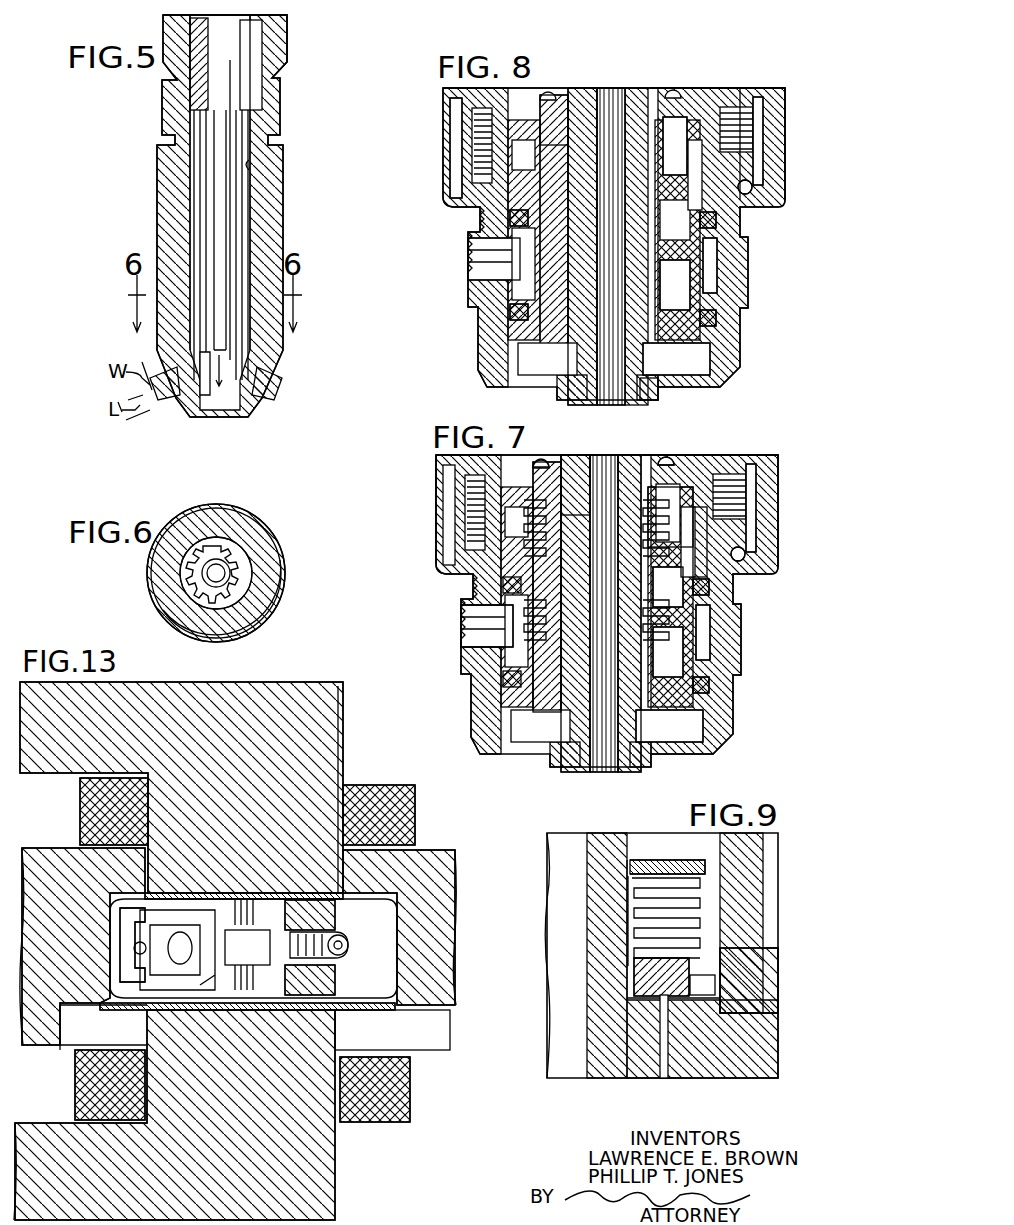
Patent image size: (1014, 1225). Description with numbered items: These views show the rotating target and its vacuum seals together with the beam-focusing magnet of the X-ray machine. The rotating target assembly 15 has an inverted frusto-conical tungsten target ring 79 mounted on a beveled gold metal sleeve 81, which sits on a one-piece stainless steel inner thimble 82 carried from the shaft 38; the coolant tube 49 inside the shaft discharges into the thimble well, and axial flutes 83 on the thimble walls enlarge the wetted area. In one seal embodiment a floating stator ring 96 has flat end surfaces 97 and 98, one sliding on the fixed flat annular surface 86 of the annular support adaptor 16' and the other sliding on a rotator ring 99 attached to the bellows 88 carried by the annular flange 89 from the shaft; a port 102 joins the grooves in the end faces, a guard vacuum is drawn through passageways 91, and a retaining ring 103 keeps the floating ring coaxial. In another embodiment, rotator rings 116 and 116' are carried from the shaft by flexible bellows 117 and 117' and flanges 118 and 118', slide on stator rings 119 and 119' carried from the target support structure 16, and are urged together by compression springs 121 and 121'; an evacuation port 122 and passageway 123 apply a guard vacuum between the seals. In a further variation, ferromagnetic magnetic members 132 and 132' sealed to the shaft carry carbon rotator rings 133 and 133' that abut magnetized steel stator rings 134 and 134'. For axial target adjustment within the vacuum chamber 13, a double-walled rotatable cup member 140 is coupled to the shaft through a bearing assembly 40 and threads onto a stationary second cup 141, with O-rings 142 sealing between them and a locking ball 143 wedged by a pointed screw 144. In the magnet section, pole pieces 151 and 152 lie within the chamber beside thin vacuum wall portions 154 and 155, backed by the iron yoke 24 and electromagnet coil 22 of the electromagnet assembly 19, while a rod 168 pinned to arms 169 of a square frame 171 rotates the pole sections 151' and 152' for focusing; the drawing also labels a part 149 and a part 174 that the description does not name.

In FIG. 13, the vacuum chamber 13 is at (464, 906).
In FIG. 5, the rotating target assembly 15 is at (300, 361).
In FIG. 13, the rotating target assembly 15 is at (359, 952).
In FIG. 8, the target support structure 16 is at (586, 157).
In FIG. 7, the target support structure 16 is at (579, 520).
In FIG. 9, the target support structure 16 is at (687, 955).
In FIG. 9, the annular support adaptor 16' is at (776, 955).
In FIG. 13, the electromagnet assembly 19 is at (353, 699).
In FIG. 13, the electromagnet coil 22 is at (375, 785).
In FIG. 13, the iron yoke 24 is at (325, 722).
In FIG. 5, the shaft 38 is at (275, 42).
In FIG. 8, the shaft 38 is at (590, 360).
In FIG. 7, the shaft 38 is at (615, 742).
In FIG. 9, the shaft 38 is at (603, 845).
In FIG. 8, the bearing assembly 40 is at (690, 90).
In FIG. 7, the bearing assembly 40 is at (676, 460).
In FIG. 5, the tube 49 is at (215, 215).
In FIG. 6, the tube 49 is at (245, 580).
In FIG. 8, the tube 49 is at (606, 400).
In FIG. 7, the tube 49 is at (611, 772).
In FIG. 5, the target ring 79 is at (275, 396).
In FIG. 6, the target ring 79 is at (207, 508).
In FIG. 5, the metal sleeve 81 is at (272, 192).
In FIG. 6, the metal sleeve 81 is at (262, 553).
In FIG. 5, the inner thimble 82 is at (270, 112).
In FIG. 6, the inner thimble 82 is at (228, 548).
In FIG. 5, the flutes 83 is at (262, 176).
In FIG. 6, the flutes 83 is at (240, 560).
In FIG. 9, the flat annular surface 86 is at (605, 990).
In FIG. 9, the bellows 88 is at (700, 905).
In FIG. 9, the annular flange 89 is at (660, 856).
In FIG. 9, the passageways 91 is at (665, 1078).
In FIG. 9, the floating stator ring 96 is at (715, 975).
In FIG. 9, the flat end surface 97 is at (610, 960).
In FIG. 9, the flat end surface 98 is at (770, 1040).
In FIG. 9, the rotator ring 99 is at (690, 955).
In FIG. 9, the port 102 is at (770, 998).
In FIG. 9, the retaining ring 103 is at (775, 1015).
In FIG. 7, the rotator ring 116 is at (705, 613).
In FIG. 7, the rotator ring 116' is at (600, 475).
In FIG. 7, the flexible bellows 117 is at (746, 637).
In FIG. 7, the flexible bellows 117' is at (538, 450).
In FIG. 7, the flange 118 is at (730, 652).
In FIG. 7, the flange 118' is at (662, 490).
In FIG. 7, the stator ring 119 is at (554, 612).
In FIG. 7, the stator ring 119' is at (760, 562).
In FIG. 7, the compression spring 121 is at (725, 628).
In FIG. 7, the compression spring 121' is at (697, 449).
In FIG. 8, the evacuation port 122 is at (470, 265).
In FIG. 7, the evacuation port 122 is at (470, 663).
In FIG. 8, the passageway 123 is at (717, 268).
In FIG. 7, the passageway 123 is at (475, 645).
In FIG. 8, the rotator ring shaped magnetic member 132 is at (476, 265).
In FIG. 8, the rotator ring shaped magnetic member 132' is at (561, 101).
In FIG. 8, the rotator ring 133 is at (730, 288).
In FIG. 8, the rotator ring 133' is at (668, 116).
In FIG. 8, the stator ring 134 is at (650, 236).
In FIG. 8, the stator ring 134' is at (441, 177).
In FIG. 8, the rotatable cup member 140 is at (738, 96).
In FIG. 7, the rotatable cup member 140 is at (437, 476).
In FIG. 8, the second cup 141 is at (738, 362).
In FIG. 7, the second cup 141 is at (740, 688).
In FIG. 8, the O-rings 142 is at (718, 215).
In FIG. 7, the O-rings 142 is at (708, 610).
In FIG. 8, the locking ball 143 is at (786, 192).
In FIG. 7, the locking ball 143 is at (778, 585).
In FIG. 8, the pointed screw 144 is at (787, 155).
In FIG. 7, the pointed screw 144 is at (776, 562).
In FIG. 13, the recess 149 is at (103, 1025).
In FIG. 13, the pole piece 151 is at (339, 915).
In FIG. 13, the rotatable pole section 151' is at (266, 912).
In FIG. 13, the pole piece 152 is at (339, 980).
In FIG. 13, the rotatable pole section 152' is at (266, 978).
In FIG. 13, the vacuum wall portion 154 is at (265, 895).
In FIG. 13, the vacuum wall portion 155 is at (340, 1020).
In FIG. 13, the rod 168 is at (135, 948).
In FIG. 13, the arms 169 is at (130, 918).
In FIG. 13, the square frame 171 is at (200, 988).
In FIG. 13, the flange 174 is at (62, 1048).